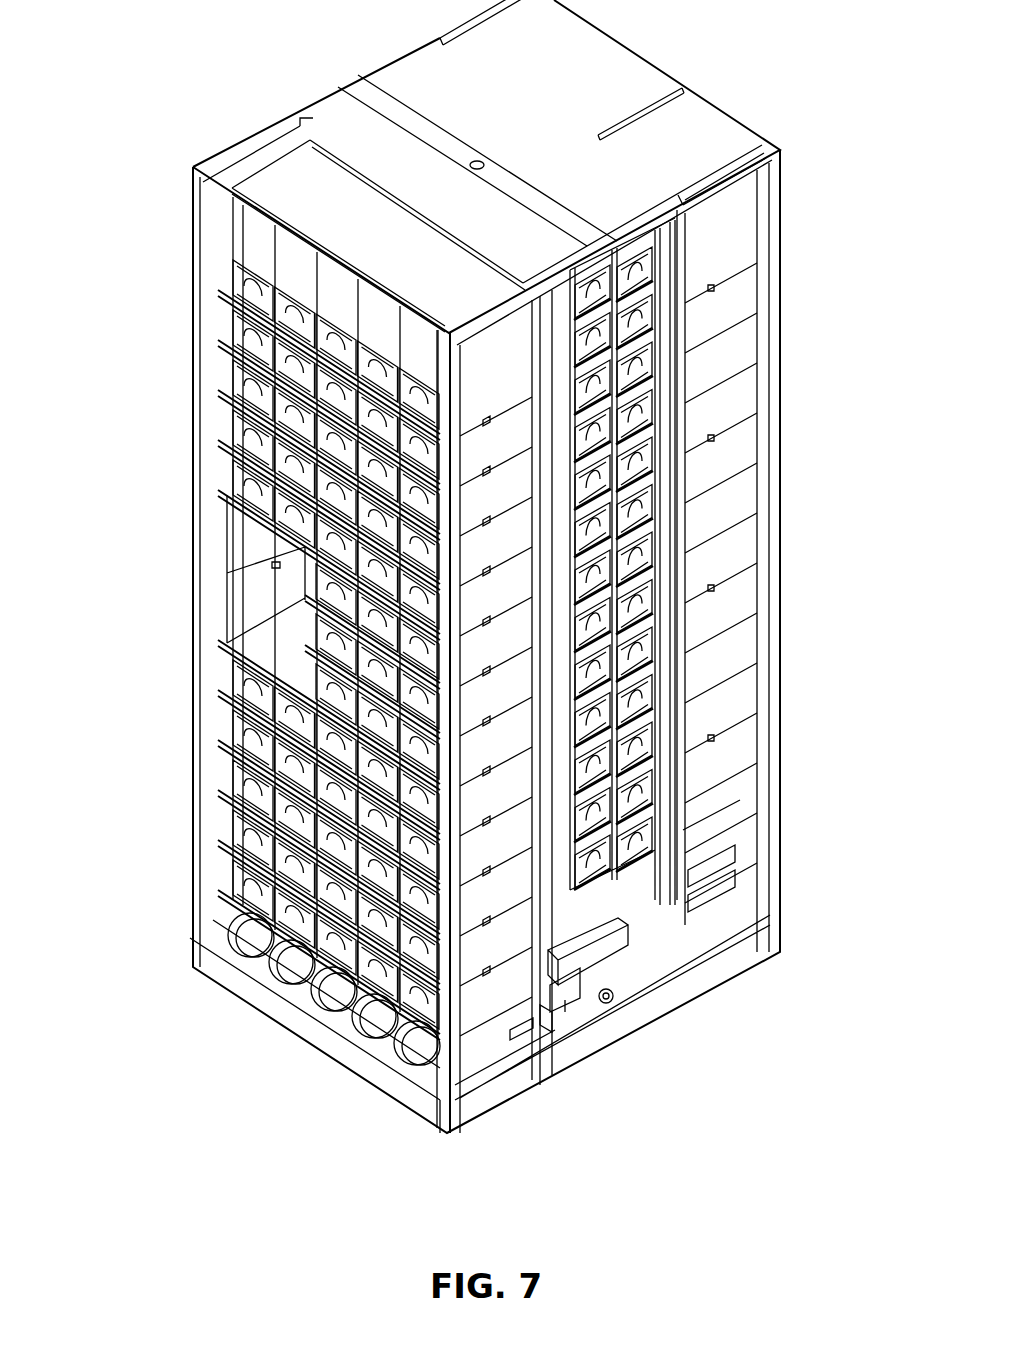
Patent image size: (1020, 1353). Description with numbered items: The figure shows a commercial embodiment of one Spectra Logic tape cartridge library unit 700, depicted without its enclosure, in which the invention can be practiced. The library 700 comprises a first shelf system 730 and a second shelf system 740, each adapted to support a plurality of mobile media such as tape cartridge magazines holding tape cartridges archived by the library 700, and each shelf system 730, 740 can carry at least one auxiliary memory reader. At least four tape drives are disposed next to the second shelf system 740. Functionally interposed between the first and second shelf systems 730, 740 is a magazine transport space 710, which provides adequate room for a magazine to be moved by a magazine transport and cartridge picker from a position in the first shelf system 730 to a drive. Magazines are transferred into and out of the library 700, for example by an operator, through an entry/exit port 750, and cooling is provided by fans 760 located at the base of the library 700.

The T-950 library unit 700 is at (482, 566).
The magazine transport space 710 is at (630, 958).
The first shelf system 730 is at (168, 722).
The second shelf system 740 is at (808, 585).
The entry/exit port 750 is at (262, 603).
The fans 760 is at (245, 998).